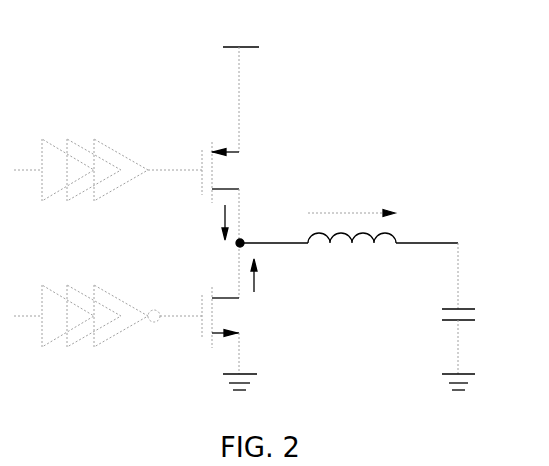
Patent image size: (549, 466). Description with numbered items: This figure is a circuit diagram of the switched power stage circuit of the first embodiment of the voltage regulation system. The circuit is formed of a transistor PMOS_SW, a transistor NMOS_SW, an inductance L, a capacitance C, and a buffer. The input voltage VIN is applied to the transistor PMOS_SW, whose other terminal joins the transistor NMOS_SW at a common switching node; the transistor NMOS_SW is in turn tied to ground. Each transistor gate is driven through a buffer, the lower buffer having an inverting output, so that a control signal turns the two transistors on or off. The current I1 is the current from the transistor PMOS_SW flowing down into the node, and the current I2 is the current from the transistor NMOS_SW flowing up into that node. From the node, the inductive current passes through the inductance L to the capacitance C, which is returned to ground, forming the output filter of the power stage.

The input voltage VIN is at (241, 77).
The element buffer is at (87, 217).
The current from the transistor PMOS_SW I1 is at (211, 222).
The current from the transistor NMOS_SW I2 is at (268, 275).
The inductance L is at (349, 249).
The capacitance C is at (471, 316).